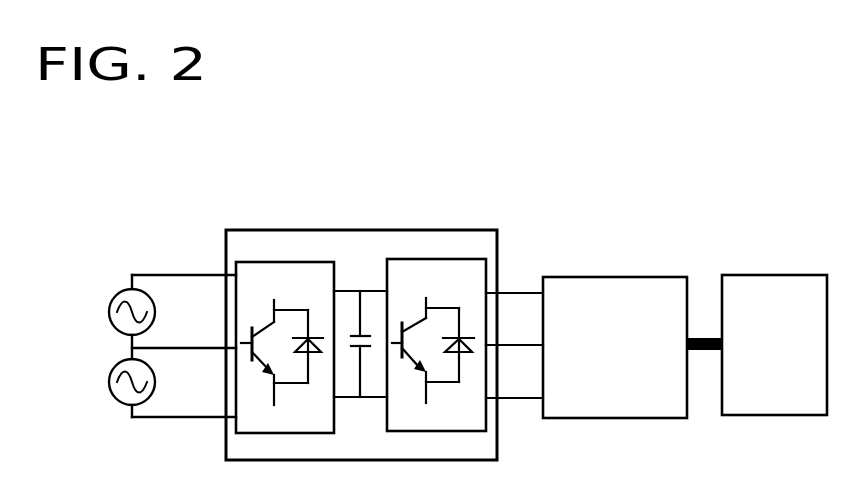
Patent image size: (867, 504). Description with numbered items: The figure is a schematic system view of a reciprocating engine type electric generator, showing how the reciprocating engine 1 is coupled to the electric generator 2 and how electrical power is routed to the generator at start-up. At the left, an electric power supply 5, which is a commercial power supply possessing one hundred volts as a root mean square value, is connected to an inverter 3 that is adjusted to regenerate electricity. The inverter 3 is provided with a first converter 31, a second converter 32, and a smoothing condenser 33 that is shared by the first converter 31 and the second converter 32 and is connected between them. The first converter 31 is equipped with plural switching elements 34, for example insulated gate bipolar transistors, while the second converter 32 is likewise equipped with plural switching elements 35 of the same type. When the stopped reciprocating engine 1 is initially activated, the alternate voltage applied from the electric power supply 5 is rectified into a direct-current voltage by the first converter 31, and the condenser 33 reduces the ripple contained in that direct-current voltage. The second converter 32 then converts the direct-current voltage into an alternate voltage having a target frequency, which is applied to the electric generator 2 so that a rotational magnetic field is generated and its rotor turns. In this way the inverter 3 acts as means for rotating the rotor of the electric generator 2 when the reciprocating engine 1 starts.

The reciprocating engine 1 is at (742, 273).
The electric generator 2 is at (570, 273).
The inverter 3 is at (248, 225).
The electric power supply 5 is at (113, 285).
The first converter 31 is at (293, 261).
The second converter 32 is at (442, 258).
The smoothing condenser 33 is at (354, 355).
The switching elements 34 is at (260, 318).
The switching elements 35 is at (410, 317).